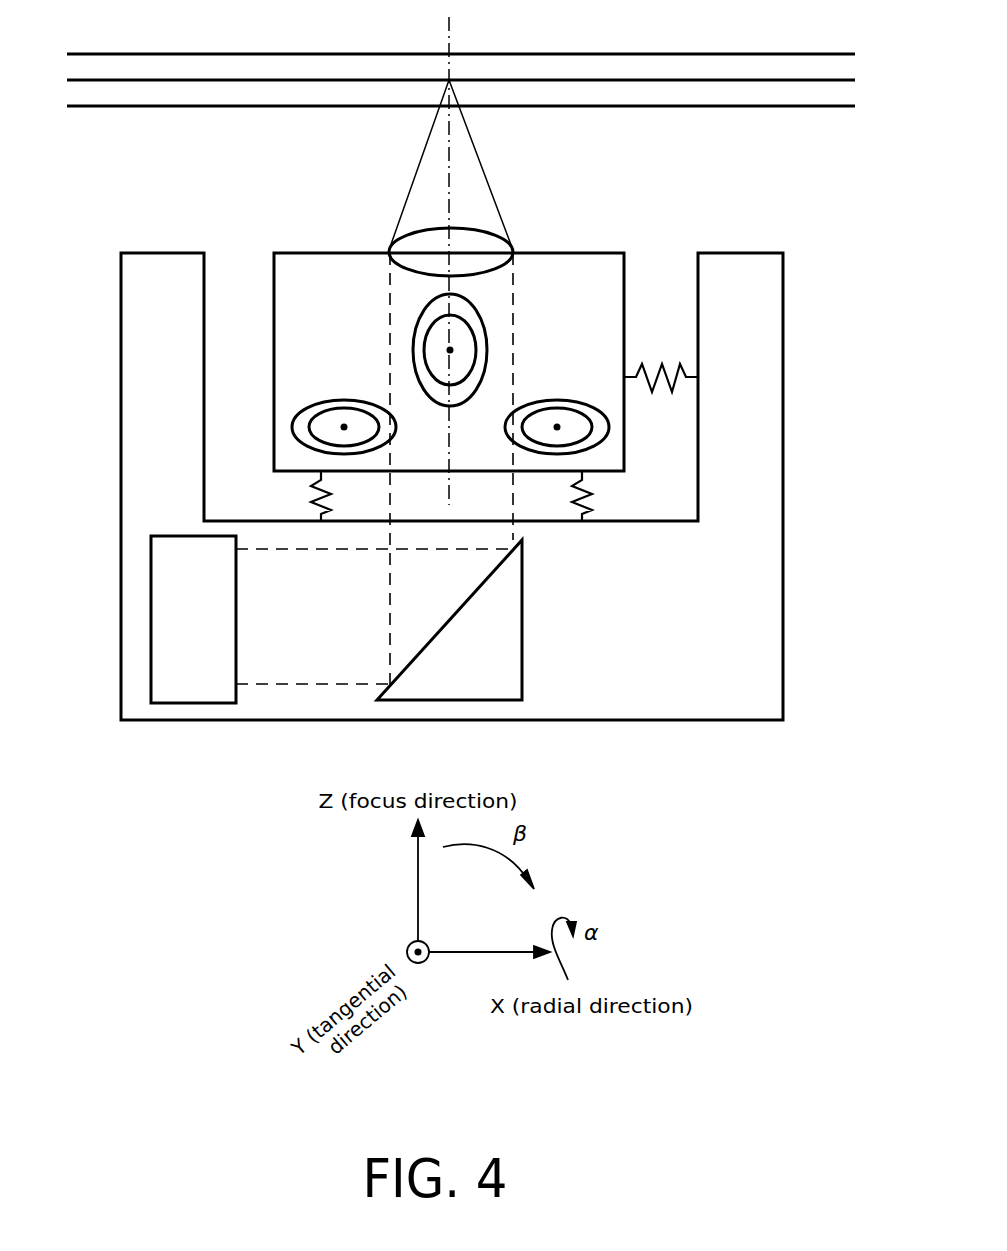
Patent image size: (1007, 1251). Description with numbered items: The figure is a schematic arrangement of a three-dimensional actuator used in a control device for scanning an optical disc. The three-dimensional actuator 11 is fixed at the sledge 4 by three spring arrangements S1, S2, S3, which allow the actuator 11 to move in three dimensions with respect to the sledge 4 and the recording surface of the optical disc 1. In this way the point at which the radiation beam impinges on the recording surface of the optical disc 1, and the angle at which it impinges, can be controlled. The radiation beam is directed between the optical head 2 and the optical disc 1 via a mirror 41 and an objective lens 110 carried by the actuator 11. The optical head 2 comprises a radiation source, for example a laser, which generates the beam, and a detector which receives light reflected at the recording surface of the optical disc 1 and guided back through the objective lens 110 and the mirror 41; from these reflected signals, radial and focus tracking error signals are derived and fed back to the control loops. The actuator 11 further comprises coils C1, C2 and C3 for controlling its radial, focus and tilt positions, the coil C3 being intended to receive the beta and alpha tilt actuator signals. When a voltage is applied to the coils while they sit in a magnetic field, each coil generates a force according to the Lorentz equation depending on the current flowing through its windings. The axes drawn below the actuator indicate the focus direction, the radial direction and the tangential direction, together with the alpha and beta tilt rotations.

The optical disc 1 is at (750, 86).
The sledge 4 is at (162, 253).
The 3D actuator 11 is at (330, 253).
The objective lens 110 is at (483, 231).
The coil C1 is at (338, 400).
The coil C2 is at (570, 400).
The coil C3 is at (465, 405).
The spring arrangement S1 is at (339, 496).
The spring arrangement S2 is at (600, 496).
The spring arrangement S3 is at (661, 360).
The optical head 2 is at (236, 618).
The mirror 41 is at (522, 618).